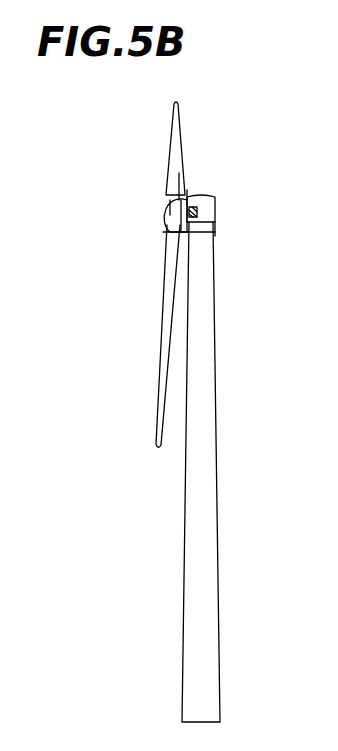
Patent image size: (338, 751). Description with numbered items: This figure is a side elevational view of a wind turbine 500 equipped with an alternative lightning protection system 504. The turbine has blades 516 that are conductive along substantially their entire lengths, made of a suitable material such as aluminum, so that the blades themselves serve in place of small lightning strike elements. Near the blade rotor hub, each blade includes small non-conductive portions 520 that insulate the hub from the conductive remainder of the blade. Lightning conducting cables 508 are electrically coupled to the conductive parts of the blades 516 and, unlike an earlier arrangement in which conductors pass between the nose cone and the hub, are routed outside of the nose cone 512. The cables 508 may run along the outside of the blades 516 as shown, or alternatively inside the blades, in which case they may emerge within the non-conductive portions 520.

The wind turbine 500 is at (110, 413).
The lightning protection system 504 is at (182, 190).
The lightning conducting cables 508 is at (167, 192).
The nose cone 512 is at (205, 198).
The blades 516 is at (193, 120).
The non-conductive portions 520 is at (187, 190).